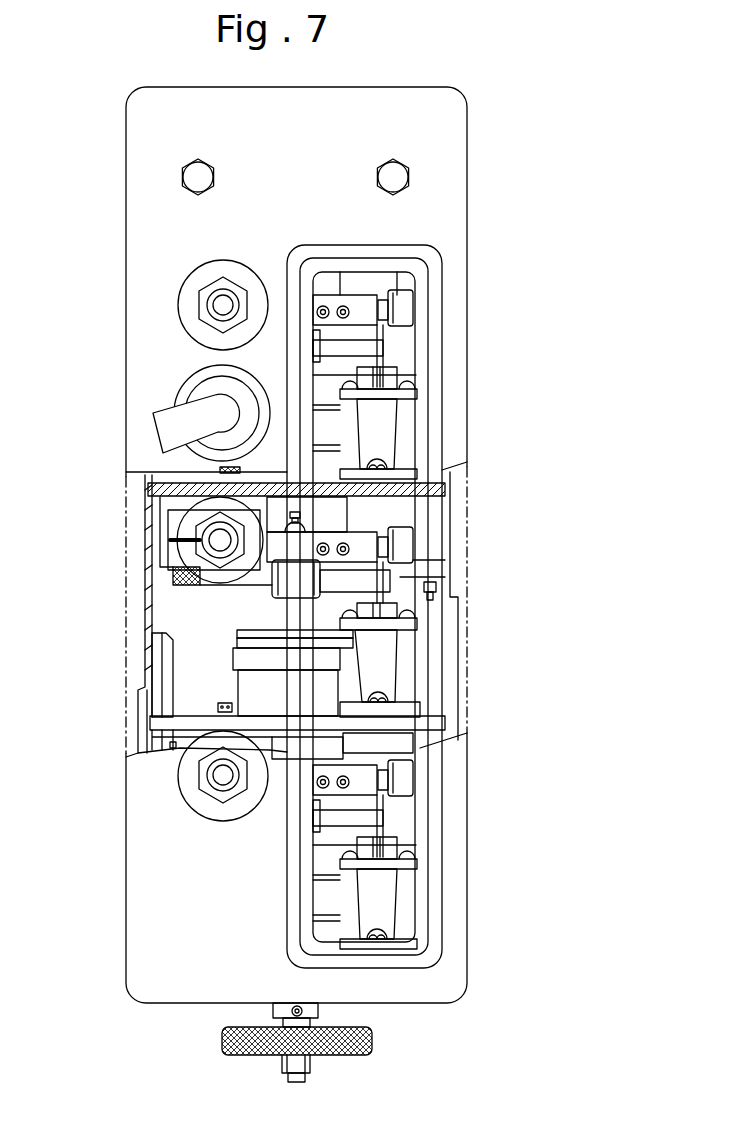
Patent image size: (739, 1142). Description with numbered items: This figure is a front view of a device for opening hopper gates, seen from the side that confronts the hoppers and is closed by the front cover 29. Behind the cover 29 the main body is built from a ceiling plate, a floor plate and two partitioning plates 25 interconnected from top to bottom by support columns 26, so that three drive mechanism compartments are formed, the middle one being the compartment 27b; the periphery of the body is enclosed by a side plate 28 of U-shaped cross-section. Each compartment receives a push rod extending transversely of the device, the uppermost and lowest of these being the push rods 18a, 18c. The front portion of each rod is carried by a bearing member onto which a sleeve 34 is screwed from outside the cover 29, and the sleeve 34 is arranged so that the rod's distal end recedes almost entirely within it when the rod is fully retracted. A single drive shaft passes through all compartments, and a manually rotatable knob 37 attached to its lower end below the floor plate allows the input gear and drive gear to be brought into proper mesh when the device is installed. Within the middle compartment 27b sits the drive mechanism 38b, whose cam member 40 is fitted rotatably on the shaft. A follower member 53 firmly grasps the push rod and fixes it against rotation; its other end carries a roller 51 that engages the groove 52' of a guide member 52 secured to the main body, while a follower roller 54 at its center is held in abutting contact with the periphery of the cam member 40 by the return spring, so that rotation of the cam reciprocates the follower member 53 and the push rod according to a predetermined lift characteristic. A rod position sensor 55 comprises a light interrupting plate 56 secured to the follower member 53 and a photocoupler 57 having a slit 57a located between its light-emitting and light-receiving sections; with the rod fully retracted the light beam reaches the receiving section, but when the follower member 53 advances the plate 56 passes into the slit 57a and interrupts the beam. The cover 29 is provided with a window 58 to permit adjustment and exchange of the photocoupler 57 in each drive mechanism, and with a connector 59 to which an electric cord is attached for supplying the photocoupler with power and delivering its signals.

The push rod 18a is at (200, 305).
The push rod 18c is at (203, 797).
The partitioning plate 25 is at (152, 488).
The support column 26 is at (158, 663).
The drive mechanism compartment 27b is at (168, 597).
The side plate 28 is at (148, 620).
The cover 29 is at (460, 312).
The sleeve 34 is at (195, 292).
The manually rotatable knob 37 is at (372, 1035).
The drive mechanism 38b is at (230, 651).
The cam member 40 is at (245, 593).
The roller 51 is at (417, 548).
The guide member 52 is at (457, 529).
The groove 52' is at (455, 539).
The follower member 53 is at (313, 521).
The follower roller 54 is at (273, 610).
The rod position sensor 55 is at (533, 603).
The light interrupting plate 56 is at (428, 603).
The photocoupler 57 is at (413, 615).
The slit 57a is at (400, 662).
The window 58 is at (408, 430).
The connector 59 is at (183, 380).